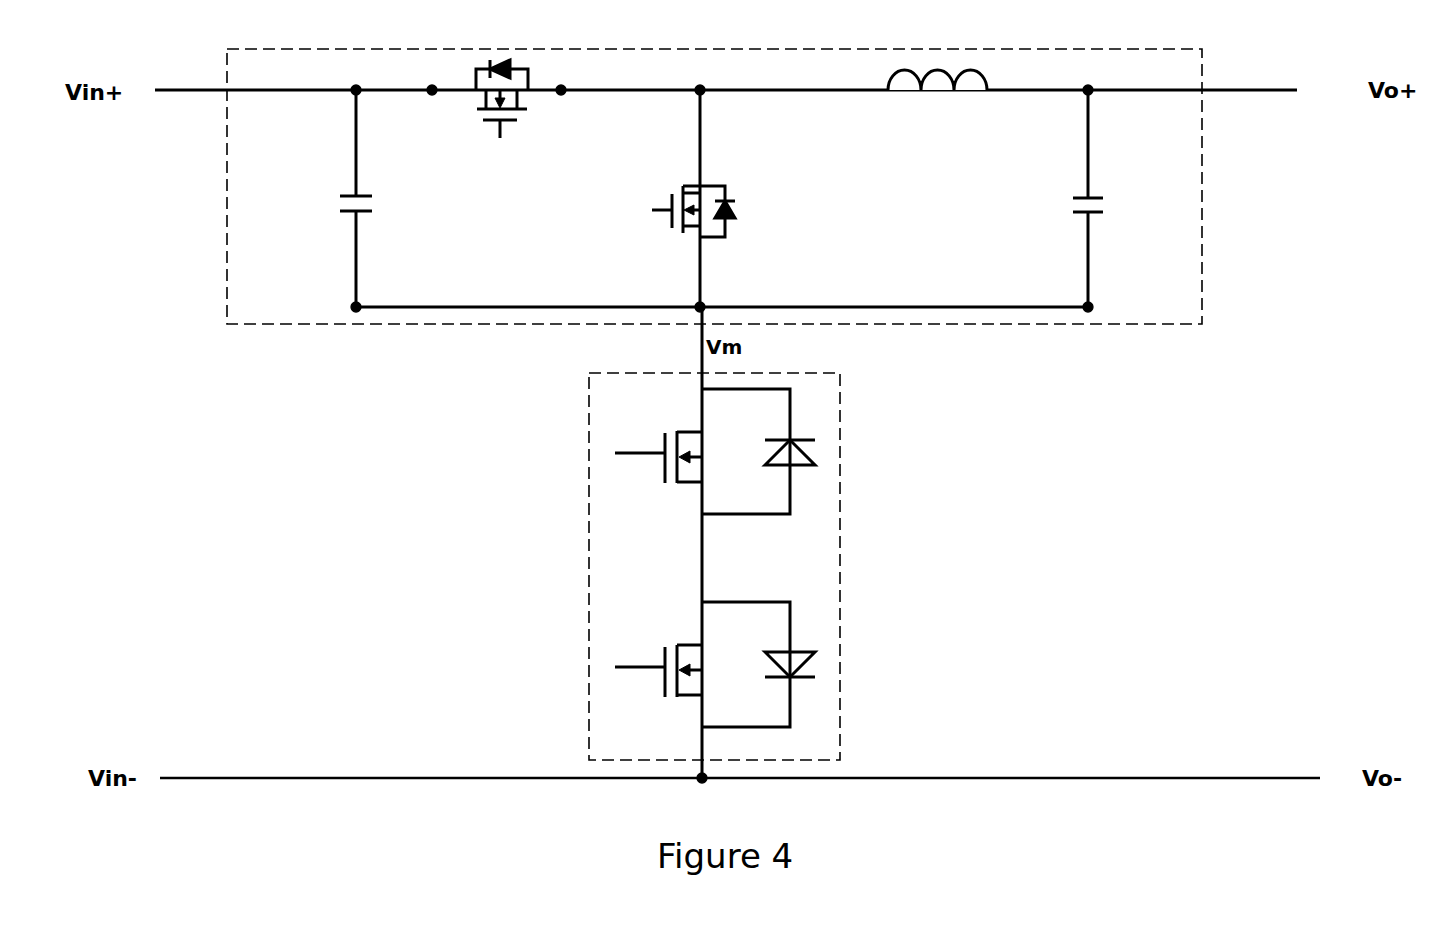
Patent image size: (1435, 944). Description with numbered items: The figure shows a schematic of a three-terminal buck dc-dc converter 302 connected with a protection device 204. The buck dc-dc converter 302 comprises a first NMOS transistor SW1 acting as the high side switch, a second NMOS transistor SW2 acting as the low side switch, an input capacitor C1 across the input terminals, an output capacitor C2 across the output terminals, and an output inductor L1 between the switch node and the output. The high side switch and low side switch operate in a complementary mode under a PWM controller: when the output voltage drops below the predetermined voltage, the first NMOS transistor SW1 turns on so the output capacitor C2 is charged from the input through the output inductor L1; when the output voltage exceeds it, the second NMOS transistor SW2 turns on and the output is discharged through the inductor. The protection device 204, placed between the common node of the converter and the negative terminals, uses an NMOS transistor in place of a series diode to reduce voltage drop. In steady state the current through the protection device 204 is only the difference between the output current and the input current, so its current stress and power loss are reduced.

The three-terminal buck dc-dc converter 302 is at (209, 237).
The protection device 204 is at (852, 597).
The input capacitor C1 is at (332, 198).
The output capacitor C2 is at (1066, 198).
The output inductor L1 is at (937, 100).
The first NMOS transistor SW1 is at (472, 104).
The second NMOS transistor SW2 is at (669, 198).